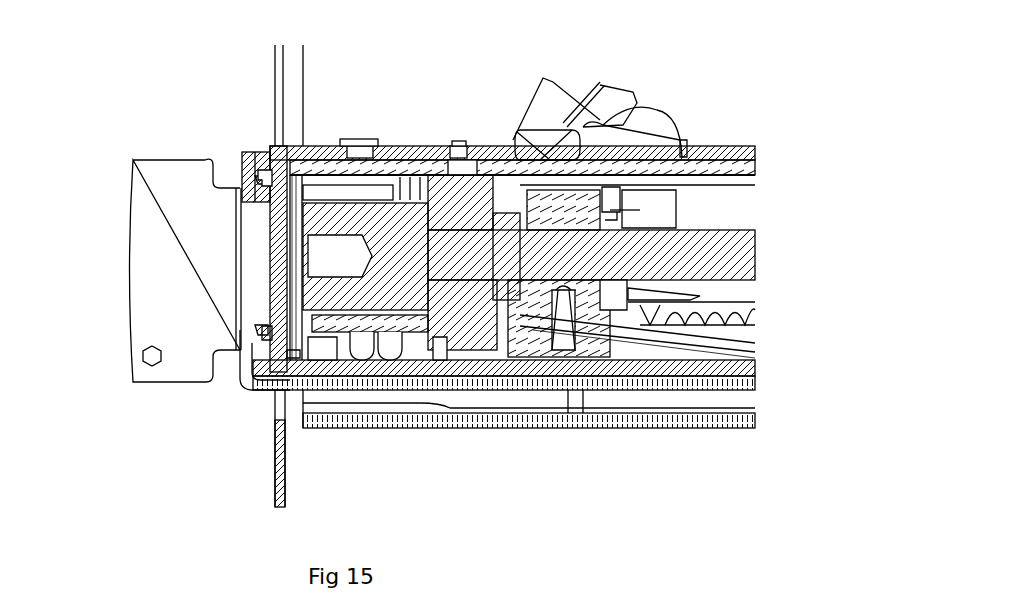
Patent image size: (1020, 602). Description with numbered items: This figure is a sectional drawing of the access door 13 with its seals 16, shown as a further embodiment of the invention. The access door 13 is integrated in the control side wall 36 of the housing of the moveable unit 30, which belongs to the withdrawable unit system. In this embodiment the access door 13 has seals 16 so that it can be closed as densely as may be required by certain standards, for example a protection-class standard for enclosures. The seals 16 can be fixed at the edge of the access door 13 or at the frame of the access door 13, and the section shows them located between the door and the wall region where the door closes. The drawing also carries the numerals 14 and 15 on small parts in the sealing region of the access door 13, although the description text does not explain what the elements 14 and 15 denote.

The access door 13 is at (248, 163).
The latching hook 14 is at (272, 174).
The lower clamping clip 15 is at (265, 330).
The seals 16 is at (267, 330).
The moveable unit 30 is at (448, 260).
The control side wall 36 is at (262, 472).